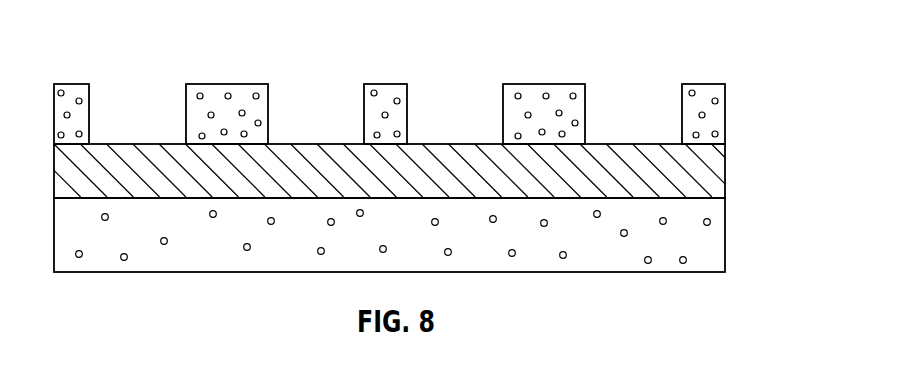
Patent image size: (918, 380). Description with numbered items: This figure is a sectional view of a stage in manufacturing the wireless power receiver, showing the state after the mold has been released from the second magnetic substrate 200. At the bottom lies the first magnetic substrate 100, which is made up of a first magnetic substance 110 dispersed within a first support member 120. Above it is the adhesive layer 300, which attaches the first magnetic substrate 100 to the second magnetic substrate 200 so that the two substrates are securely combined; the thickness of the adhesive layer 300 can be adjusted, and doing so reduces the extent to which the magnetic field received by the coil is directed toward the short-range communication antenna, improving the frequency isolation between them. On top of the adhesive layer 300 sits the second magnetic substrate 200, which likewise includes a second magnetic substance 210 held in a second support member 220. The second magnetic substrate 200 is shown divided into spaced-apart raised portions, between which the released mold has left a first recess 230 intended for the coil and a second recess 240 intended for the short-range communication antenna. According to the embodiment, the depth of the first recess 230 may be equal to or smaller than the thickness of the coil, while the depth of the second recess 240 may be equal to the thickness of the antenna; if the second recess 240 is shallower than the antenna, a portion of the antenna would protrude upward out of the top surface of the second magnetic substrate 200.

The first magnetic substrate 100 is at (788, 210).
The first magnetic substance 110 is at (711, 222).
The first support member 120 is at (718, 255).
The second magnetic substrate 200 is at (792, 93).
The second magnetic substance 210 is at (719, 101).
The second support member 220 is at (726, 131).
The first recess 230 is at (315, 102).
The second recess 240 is at (134, 102).
The adhesive layer 300 is at (720, 170).